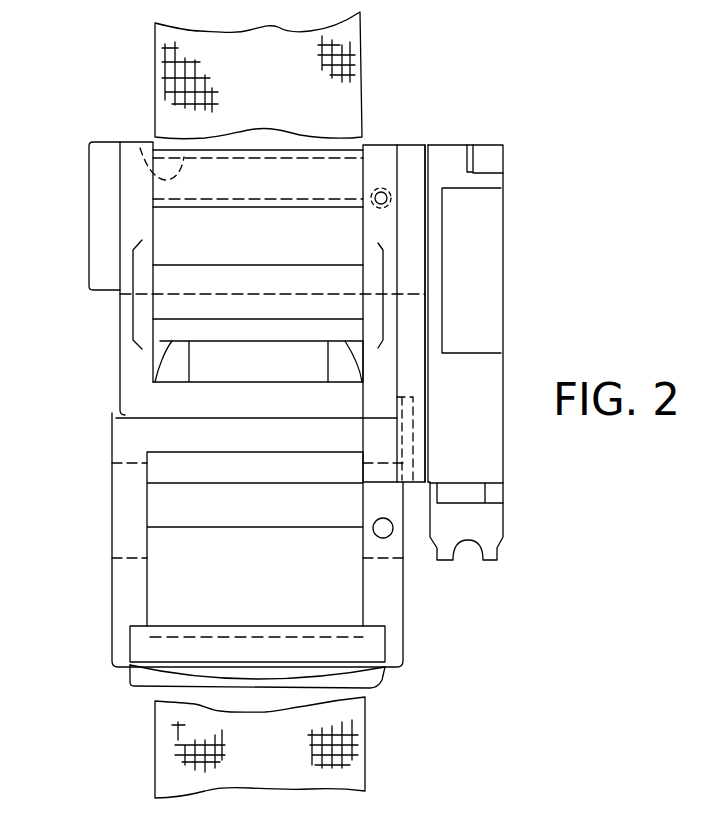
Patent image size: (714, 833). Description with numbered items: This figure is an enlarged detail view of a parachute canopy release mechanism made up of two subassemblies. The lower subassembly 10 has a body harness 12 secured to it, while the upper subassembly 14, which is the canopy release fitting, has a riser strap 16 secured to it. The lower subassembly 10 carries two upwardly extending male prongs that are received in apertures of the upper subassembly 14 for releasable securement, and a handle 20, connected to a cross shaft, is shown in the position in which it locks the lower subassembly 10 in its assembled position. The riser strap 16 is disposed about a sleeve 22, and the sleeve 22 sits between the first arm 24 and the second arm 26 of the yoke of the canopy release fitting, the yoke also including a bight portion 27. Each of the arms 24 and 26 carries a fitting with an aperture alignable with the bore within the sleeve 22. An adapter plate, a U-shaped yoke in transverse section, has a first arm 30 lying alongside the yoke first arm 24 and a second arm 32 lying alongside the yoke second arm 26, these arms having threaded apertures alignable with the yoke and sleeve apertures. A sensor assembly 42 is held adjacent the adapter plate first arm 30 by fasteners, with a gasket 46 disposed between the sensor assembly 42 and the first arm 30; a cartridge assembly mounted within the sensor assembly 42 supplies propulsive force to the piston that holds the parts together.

The lower subassembly 10 is at (88, 596).
The body harness 12 is at (157, 752).
The upper subassembly 14 is at (80, 253).
The riser strap 16 is at (157, 44).
The handle 20 is at (172, 332).
The sleeve 22 is at (141, 148).
The first arm 24 is at (377, 157).
The second arm 26 is at (136, 207).
The bight portion 27 is at (132, 407).
The first arm 30 is at (414, 160).
The second arm 32 is at (105, 175).
The sensor assembly 42 is at (458, 152).
The gasket 46 is at (434, 152).